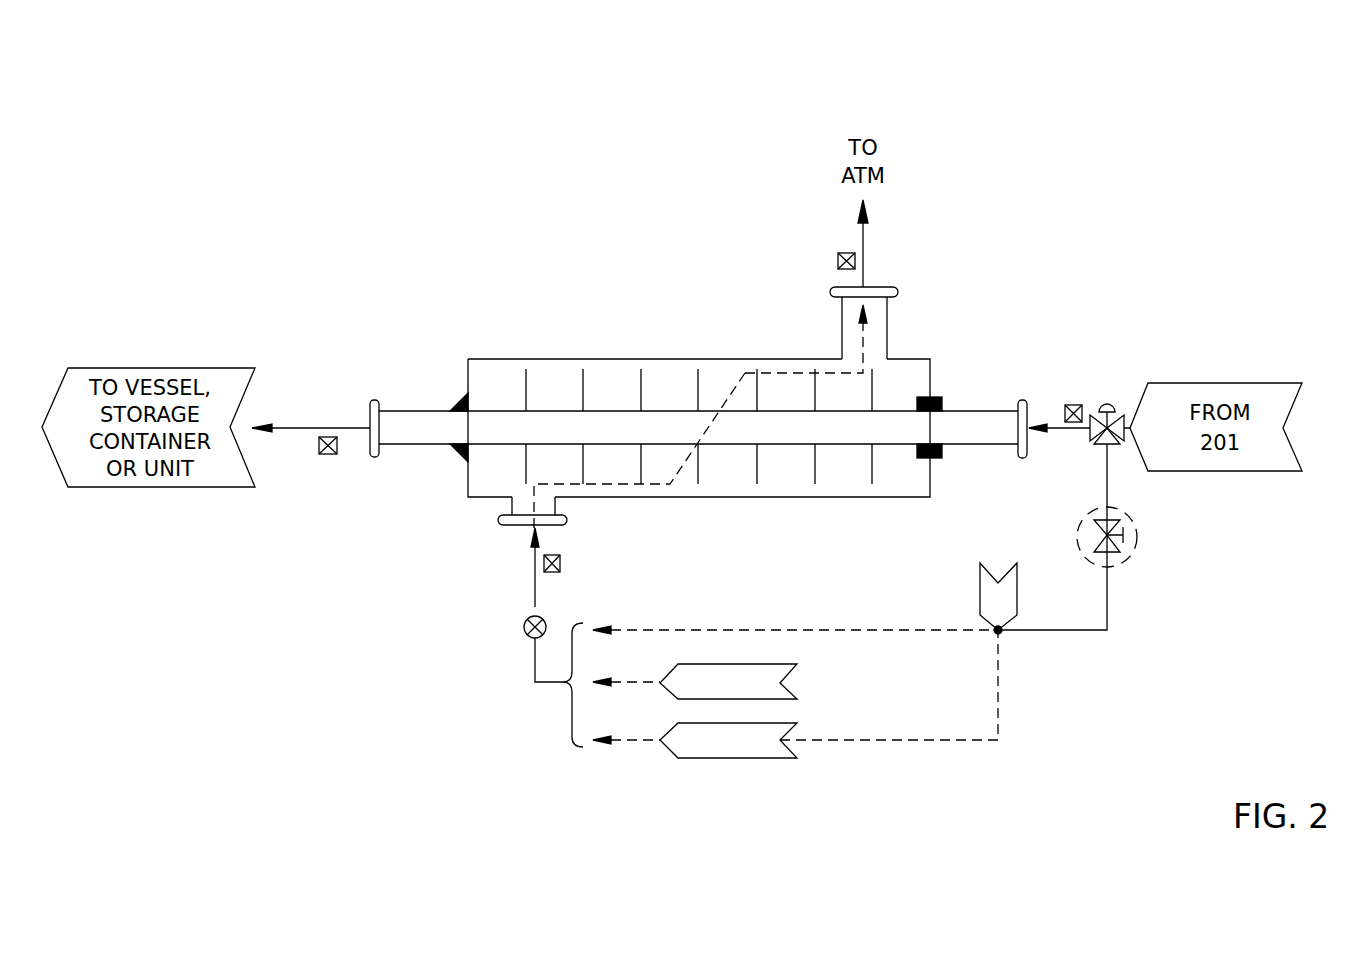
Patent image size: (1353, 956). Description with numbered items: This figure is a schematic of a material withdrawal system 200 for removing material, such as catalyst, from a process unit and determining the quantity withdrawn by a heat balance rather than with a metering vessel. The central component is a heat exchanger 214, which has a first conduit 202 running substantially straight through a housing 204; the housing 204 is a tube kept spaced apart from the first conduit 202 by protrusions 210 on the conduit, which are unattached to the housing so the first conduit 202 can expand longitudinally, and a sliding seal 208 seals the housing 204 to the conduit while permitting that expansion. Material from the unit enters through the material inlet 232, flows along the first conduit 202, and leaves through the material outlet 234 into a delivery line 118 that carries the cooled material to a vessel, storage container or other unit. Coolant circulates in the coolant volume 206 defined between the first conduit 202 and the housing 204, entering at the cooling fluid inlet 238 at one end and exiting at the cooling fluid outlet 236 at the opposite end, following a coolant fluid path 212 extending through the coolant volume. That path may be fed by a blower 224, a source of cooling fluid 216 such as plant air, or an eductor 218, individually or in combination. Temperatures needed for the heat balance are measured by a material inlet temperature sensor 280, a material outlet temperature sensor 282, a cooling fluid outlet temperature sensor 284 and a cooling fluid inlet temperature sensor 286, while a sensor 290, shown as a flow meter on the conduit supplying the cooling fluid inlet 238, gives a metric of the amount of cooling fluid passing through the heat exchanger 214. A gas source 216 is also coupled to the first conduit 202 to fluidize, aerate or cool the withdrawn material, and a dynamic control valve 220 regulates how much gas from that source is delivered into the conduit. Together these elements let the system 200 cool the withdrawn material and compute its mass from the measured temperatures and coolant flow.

The material withdrawal system 200 is at (323, 112).
The heat exchanger 214 is at (480, 250).
The housing 204 is at (668, 359).
The first conduit 202 is at (555, 411).
The protrusions 210 is at (526, 381).
The coolant volume 206 is at (735, 368).
The coolant fluid path 212 is at (717, 420).
The sliding seal 208 is at (950, 400).
The material outlet 234 is at (372, 402).
The material inlet 232 is at (1020, 458).
The cooling fluid outlet 236 is at (898, 296).
The cooling fluid inlet 238 is at (567, 521).
The delivery line 118 is at (300, 424).
The material outlet temperature sensor 282 is at (305, 450).
The cooling fluid outlet temperature sensor 284 is at (841, 237).
The material inlet temperature sensor 280 is at (1078, 386).
The cooling fluid inlet temperature sensor 286 is at (561, 565).
The sensor 290 is at (523, 626).
The dynamic control valve 220 is at (1137, 532).
The gas source 216 is at (980, 597).
The blower 224 is at (716, 694).
The eductor 218 is at (716, 752).